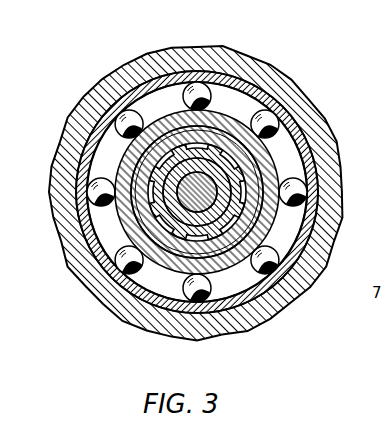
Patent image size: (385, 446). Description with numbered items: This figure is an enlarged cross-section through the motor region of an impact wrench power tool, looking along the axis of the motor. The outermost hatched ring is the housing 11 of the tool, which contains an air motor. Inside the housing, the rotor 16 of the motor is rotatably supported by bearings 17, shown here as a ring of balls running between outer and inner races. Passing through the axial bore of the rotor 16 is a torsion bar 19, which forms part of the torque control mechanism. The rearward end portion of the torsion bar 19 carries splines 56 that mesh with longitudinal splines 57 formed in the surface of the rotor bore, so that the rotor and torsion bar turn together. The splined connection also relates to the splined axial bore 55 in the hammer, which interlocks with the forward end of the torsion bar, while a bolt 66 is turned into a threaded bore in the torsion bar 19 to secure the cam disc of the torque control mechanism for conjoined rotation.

The housing 11 is at (128, 56).
The bearings 17 is at (217, 74).
The torsion bar 19 is at (110, 163).
The rotor 16 is at (228, 143).
The splines 56 is at (248, 178).
The bolt 66 is at (218, 242).
The axial bore 55 is at (163, 223).
The longitudinal splines 57 is at (233, 190).